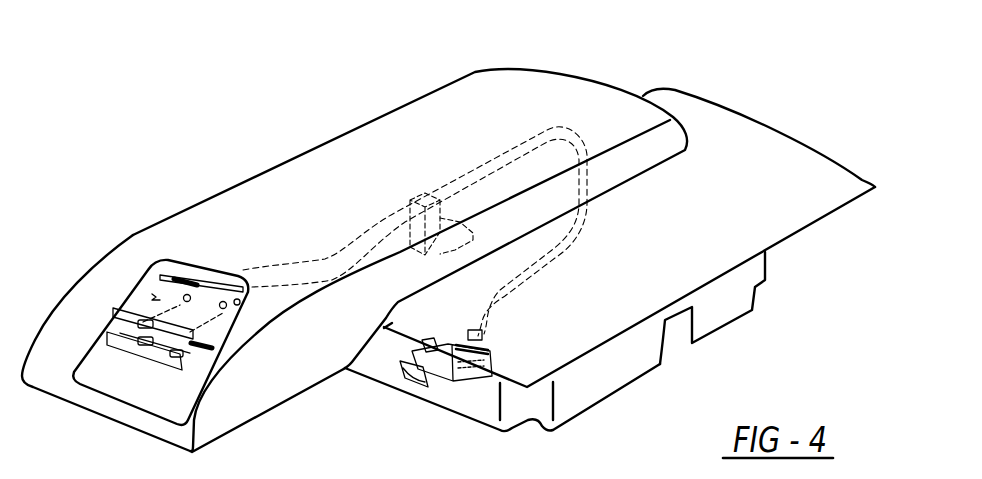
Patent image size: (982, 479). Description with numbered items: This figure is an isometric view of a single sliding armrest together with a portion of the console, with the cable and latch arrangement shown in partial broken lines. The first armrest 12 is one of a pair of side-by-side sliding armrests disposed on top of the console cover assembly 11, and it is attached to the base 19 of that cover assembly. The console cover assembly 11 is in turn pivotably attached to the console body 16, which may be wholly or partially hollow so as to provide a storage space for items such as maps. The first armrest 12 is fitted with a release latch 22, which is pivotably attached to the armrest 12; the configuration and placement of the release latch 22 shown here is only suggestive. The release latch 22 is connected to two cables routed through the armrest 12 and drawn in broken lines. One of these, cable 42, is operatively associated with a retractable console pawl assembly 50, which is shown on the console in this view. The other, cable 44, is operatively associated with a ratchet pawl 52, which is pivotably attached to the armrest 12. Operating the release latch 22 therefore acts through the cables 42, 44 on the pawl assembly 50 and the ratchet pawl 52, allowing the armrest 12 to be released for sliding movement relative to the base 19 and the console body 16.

The console cover assembly 11 is at (696, 115).
The first armrest 12 is at (424, 125).
The console body 16 is at (725, 308).
The base 19 is at (770, 170).
The release latch 22 is at (150, 302).
The cable 42 is at (313, 253).
The cable 44 is at (327, 305).
The retractable console pawl assembly 50 is at (432, 380).
The ratchet pawl 52 is at (427, 230).